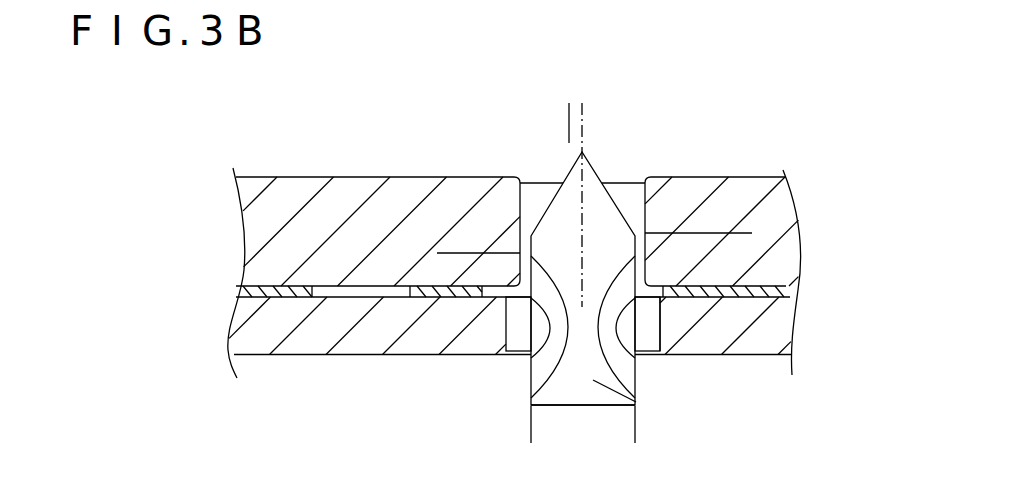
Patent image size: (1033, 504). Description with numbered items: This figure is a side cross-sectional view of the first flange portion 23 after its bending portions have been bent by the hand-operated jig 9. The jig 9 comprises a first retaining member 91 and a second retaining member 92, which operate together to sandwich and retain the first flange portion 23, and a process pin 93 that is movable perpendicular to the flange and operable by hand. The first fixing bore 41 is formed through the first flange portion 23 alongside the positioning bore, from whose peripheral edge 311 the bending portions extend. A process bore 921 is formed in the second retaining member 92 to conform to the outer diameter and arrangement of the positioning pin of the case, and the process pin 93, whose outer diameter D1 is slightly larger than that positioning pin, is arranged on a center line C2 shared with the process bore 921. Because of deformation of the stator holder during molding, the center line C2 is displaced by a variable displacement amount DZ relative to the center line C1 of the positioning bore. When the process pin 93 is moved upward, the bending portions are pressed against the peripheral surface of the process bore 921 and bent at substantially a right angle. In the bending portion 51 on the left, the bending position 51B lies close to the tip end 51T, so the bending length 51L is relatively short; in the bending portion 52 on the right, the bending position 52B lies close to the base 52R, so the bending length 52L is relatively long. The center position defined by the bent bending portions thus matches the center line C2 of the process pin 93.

The jig 9 is at (373, 128).
The second retaining member 92 is at (300, 195).
The process bore 921 is at (632, 197).
The first retaining member 91 is at (272, 337).
The first flange portion 23 is at (238, 292).
The first fixing bore 41 is at (342, 292).
The peripheral edge 311 is at (438, 298).
The process pin 93 is at (637, 408).
The bending portion 51 is at (496, 298).
The bending position 51B is at (531, 357).
The tip end 51T is at (531, 407).
The bending length 51L is at (466, 254).
The bending portion 52 is at (636, 360).
The bending position 52B is at (636, 357).
The base 52R is at (665, 300).
The bending length 52L is at (730, 234).
The outer diameter of the process pin D1 is at (634, 422).
The displacement amount DZ is at (538, 122).
The center line of the first positioning bore C1 is at (569, 106).
The center line of the process pin C2 is at (585, 106).